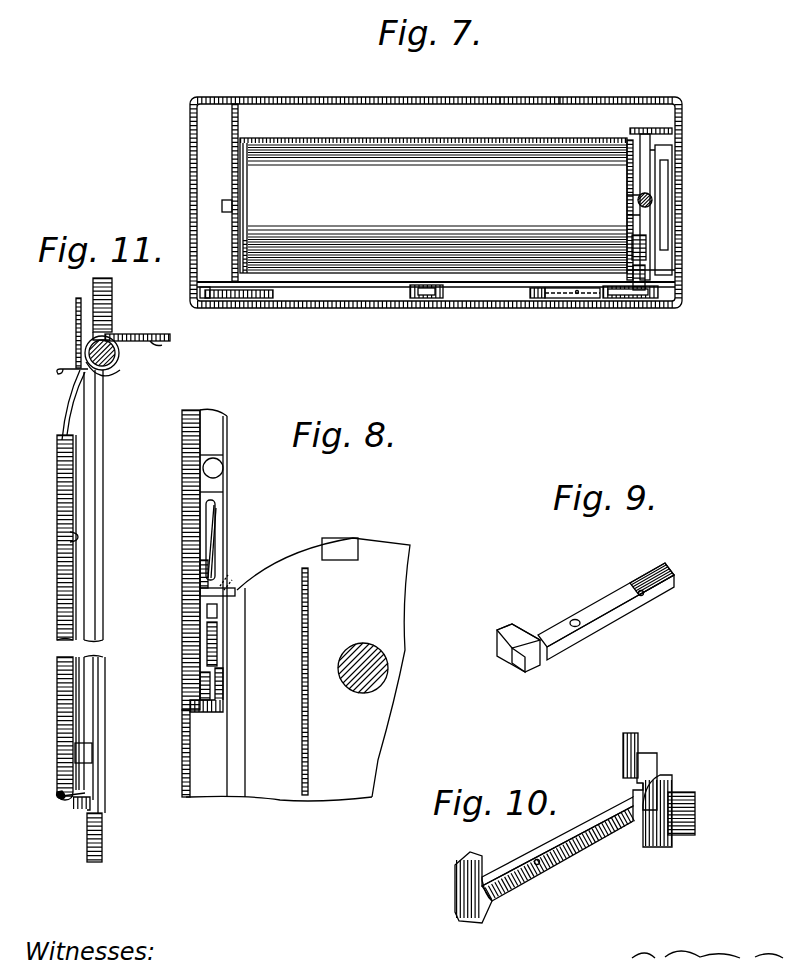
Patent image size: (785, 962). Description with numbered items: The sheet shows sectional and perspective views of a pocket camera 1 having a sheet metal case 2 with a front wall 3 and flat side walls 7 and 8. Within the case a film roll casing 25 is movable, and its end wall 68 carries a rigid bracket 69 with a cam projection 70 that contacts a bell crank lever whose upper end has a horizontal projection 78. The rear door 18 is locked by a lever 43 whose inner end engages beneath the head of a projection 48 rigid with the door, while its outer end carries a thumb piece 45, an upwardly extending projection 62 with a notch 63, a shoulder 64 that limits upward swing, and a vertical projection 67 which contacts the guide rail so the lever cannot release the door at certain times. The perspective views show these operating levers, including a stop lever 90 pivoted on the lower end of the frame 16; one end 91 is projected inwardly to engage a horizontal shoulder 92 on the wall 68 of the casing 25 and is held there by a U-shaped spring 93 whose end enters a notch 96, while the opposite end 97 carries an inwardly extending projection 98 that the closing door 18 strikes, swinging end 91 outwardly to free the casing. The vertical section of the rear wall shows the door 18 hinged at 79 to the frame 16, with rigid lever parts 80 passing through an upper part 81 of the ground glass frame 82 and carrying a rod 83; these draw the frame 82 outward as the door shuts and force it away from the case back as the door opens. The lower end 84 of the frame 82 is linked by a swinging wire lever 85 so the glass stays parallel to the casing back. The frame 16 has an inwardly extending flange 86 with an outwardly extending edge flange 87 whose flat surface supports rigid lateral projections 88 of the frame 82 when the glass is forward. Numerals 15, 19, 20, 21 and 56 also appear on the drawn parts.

In FIG. 7, the camera 1 is at (678, 104).
In FIG. 7, the sheet metal case 2 is at (620, 100).
In FIG. 8, the sheet metal case 2 is at (186, 798).
In FIG. 7, the front wall 3 is at (560, 100).
In FIG. 7, the flat side wall 7 is at (680, 196).
In FIG. 7, the flat side wall 8 is at (190, 184).
In FIG. 11, the foot flange 15 is at (112, 332).
In FIG. 8, the foot flange 15 is at (190, 705).
In FIG. 11, the frame 16 is at (97, 288).
In FIG. 8, the frame 16 is at (185, 525).
In FIG. 11, the door 18 is at (160, 334).
In FIG. 11, the guide strip 19 is at (60, 492).
In FIG. 11, the strip 20 is at (62, 576).
In FIG. 11, the rivet 21 is at (72, 535).
In FIG. 7, the film roll casing 25 is at (433, 205).
In FIG. 8, the film roll casing 25 is at (400, 580).
In FIG. 8, the lever 43 is at (207, 645).
In FIG. 10, the lever 43 is at (578, 840).
In FIG. 8, the thumb piece 45 is at (200, 591).
In FIG. 10, the thumb piece 45 is at (696, 795).
In FIG. 7, the projection 48 is at (428, 300).
In FIG. 10, the foot 56 is at (455, 913).
In FIG. 10, the upwardly extending projection 62 is at (662, 775).
In FIG. 10, the notch 63 is at (633, 795).
In FIG. 10, the shoulder 64 is at (647, 753).
In FIG. 10, the vertical projection 67 is at (628, 733).
In FIG. 8, the end wall 68 is at (370, 543).
In FIG. 7, the rigid bracket 69 is at (648, 250).
In FIG. 7, the cam projection 70 is at (640, 302).
In FIG. 8, the horizontal projection 78 is at (207, 611).
In FIG. 11, the hinge 79 is at (118, 358).
In FIG. 11, the lever parts 80 is at (116, 372).
In FIG. 11, the upper part 81 is at (76, 320).
In FIG. 11, the frame 82 is at (64, 410).
In FIG. 8, the frame 82 is at (228, 440).
In FIG. 11, the rod 83 is at (68, 368).
In FIG. 11, the lower end 84 is at (78, 760).
In FIG. 8, the lower end 84 is at (224, 470).
In FIG. 11, the swinging wire lever 85 is at (80, 794).
In FIG. 8, the inwardly extending flange 86 is at (210, 410).
In FIG. 8, the edge flange 87 is at (207, 420).
In FIG. 8, the lateral projections 88 is at (224, 458).
In FIG. 7, the stop lever 90 is at (580, 300).
In FIG. 9, the stop lever 90 is at (598, 605).
In FIG. 8, the end of stop lever 91 is at (208, 540).
In FIG. 9, the end of stop lever 91 is at (674, 575).
In FIG. 8, the horizontal shoulder 92 is at (233, 583).
In FIG. 8, the U-shaped spring 93 is at (206, 512).
In FIG. 9, the notch 96 is at (642, 597).
In FIG. 7, the opposite end of stop lever 97 is at (548, 300).
In FIG. 9, the opposite end of stop lever 97 is at (498, 655).
In FIG. 7, the inwardly extending projection 98 is at (536, 300).
In FIG. 8, the inwardly extending projection 98 is at (200, 566).
In FIG. 9, the inwardly extending projection 98 is at (533, 662).